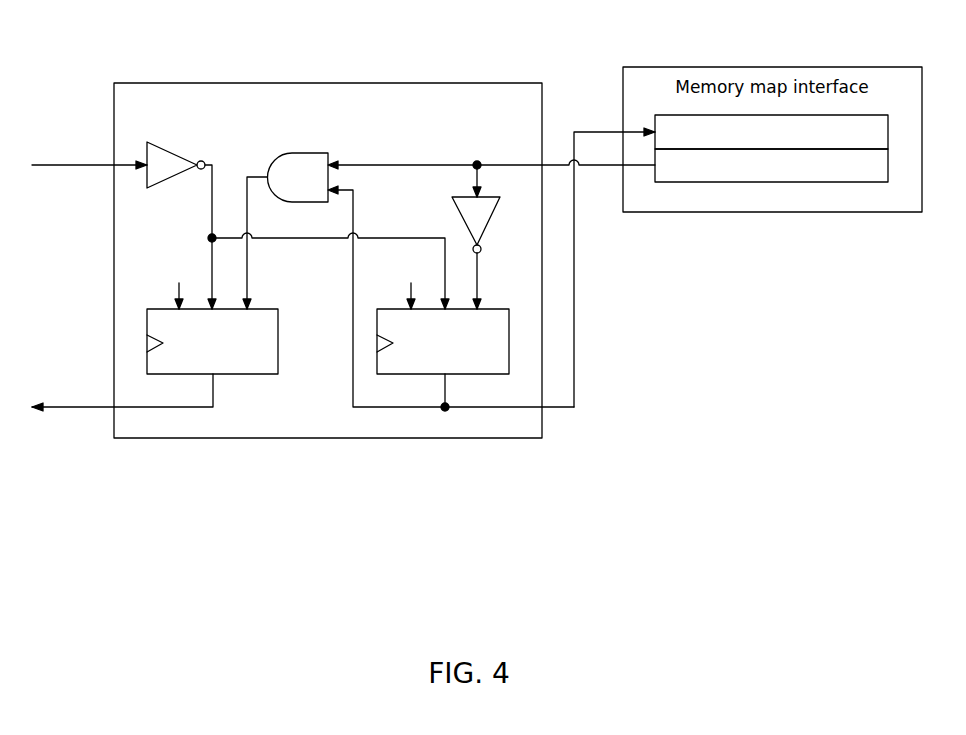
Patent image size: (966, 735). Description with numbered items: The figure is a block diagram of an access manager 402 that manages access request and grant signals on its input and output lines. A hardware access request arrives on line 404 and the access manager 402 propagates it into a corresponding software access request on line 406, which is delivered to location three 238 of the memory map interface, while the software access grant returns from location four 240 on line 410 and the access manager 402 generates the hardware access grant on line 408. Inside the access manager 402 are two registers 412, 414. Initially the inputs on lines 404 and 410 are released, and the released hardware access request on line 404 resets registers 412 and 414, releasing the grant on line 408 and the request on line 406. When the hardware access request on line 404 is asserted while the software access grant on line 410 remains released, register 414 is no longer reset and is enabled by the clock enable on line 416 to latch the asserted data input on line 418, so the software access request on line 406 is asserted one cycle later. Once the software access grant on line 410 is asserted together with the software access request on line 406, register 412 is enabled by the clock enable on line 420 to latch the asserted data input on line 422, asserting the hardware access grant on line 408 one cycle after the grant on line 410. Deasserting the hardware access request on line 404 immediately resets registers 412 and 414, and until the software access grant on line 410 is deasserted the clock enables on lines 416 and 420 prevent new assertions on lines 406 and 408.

The access manager 402 is at (143, 83).
The hardware access request line 404 is at (62, 167).
The software access request line 406 is at (587, 130).
The hardware access grant line 408 is at (62, 409).
The software access grant line 410 is at (612, 167).
The register 412 is at (228, 374).
The register 414 is at (460, 374).
The clock enable line 416 is at (478, 283).
The data input line 418 is at (408, 295).
The clock enable line 420 is at (248, 283).
The data input line 422 is at (177, 295).
The location three 238 is at (771, 132).
The location four 240 is at (771, 165).